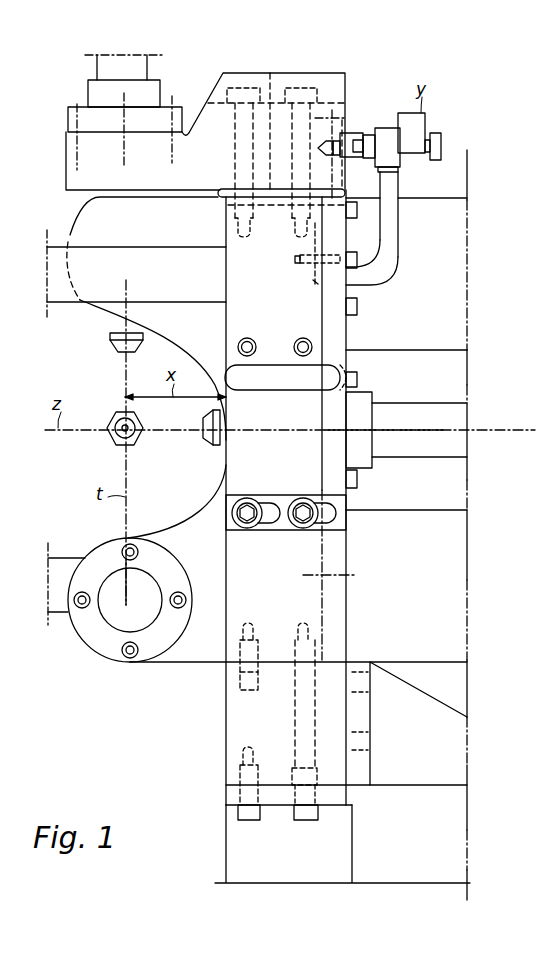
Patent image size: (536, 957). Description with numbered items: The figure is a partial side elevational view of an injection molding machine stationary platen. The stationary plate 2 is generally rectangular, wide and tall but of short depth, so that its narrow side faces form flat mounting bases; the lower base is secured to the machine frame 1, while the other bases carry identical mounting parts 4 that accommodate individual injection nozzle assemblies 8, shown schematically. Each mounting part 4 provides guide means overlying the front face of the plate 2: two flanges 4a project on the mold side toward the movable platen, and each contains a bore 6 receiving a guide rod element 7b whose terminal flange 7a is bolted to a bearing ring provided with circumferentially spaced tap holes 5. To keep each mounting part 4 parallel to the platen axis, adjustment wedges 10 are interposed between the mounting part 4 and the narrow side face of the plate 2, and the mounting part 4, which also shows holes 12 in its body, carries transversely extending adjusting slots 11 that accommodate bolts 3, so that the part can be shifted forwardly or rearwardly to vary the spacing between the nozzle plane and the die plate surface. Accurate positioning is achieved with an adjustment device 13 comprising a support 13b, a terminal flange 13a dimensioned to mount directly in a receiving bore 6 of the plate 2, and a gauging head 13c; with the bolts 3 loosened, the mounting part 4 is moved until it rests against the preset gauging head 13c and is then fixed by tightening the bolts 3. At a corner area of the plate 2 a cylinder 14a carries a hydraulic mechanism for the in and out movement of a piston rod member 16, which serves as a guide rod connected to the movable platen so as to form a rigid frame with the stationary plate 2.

The base or frame 1 is at (245, 858).
The stationary plate 2 is at (318, 336).
The bolts 3 is at (244, 72).
The mounting part 4 is at (330, 94).
The flange 4a is at (72, 172).
The pin 5 is at (300, 260).
The bore 6 is at (314, 283).
The terminal flange 7a is at (68, 118).
The guide rod element 7b is at (137, 63).
The injection nozzle assembly 8 is at (115, 353).
The wedge 10 is at (218, 196).
The adjusting slot 11 is at (272, 121).
The holes 12 is at (224, 320).
The adjustment device 13 is at (437, 118).
The terminal flange 13a is at (350, 288).
The support 13b is at (393, 186).
The gauging head 13c is at (352, 133).
The cylinder 14a is at (458, 612).
The piston rod member 16 is at (60, 305).